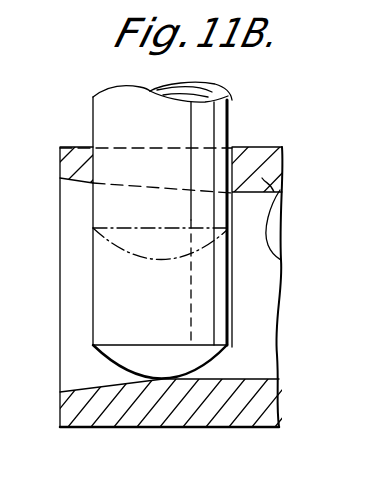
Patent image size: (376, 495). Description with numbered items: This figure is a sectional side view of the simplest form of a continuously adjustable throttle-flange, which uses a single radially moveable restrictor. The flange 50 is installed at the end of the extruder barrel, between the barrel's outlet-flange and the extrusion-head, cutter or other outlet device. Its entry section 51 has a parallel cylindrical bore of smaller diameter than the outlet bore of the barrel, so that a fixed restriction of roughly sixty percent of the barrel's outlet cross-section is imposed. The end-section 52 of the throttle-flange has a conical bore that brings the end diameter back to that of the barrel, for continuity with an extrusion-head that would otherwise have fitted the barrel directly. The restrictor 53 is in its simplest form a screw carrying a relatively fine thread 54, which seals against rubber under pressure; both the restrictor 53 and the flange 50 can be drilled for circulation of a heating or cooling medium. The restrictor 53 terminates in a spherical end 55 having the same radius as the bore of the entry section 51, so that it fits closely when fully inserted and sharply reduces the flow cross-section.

The flange 50 is at (55, 151).
The entry section 51 is at (281, 258).
The end-section 52 is at (73, 405).
The restrictor 53 is at (93, 206).
The fine thread 54 is at (243, 148).
The spherical end 55 is at (117, 362).